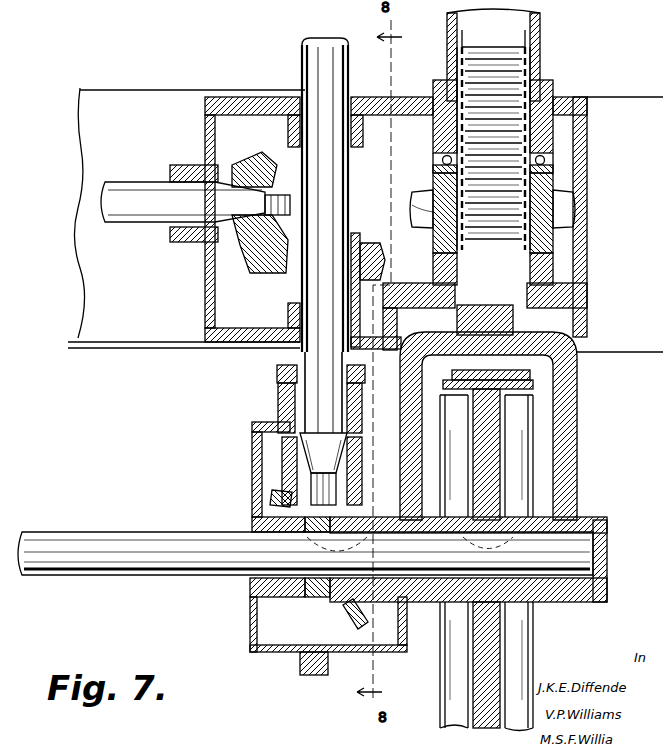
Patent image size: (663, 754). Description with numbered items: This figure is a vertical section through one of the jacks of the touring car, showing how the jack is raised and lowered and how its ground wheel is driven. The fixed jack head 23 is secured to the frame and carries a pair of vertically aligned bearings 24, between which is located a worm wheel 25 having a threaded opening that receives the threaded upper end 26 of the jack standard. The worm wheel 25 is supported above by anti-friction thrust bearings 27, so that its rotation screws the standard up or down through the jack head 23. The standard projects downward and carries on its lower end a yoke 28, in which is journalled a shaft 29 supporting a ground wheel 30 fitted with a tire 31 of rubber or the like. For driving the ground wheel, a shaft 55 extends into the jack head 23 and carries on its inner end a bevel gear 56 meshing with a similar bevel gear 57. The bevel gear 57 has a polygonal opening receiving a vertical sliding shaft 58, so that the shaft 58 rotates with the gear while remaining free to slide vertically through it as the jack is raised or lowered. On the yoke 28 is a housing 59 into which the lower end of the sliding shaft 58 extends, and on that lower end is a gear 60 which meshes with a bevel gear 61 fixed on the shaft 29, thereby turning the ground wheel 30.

The jack head 23 is at (560, 103).
The bearings 24 is at (540, 137).
The worm wheel 25 is at (555, 205).
The threaded upper end 26 is at (548, 181).
The anti-friction thrust bearings 27 is at (548, 162).
The yoke 28 is at (570, 437).
The shaft 29 is at (573, 547).
The ground wheel 30 is at (520, 478).
The tire 31 is at (505, 379).
The shaft 55 is at (130, 188).
The bevel gear 56 is at (258, 160).
The bevel gear 57 is at (272, 272).
The vertical sliding shaft 58 is at (305, 342).
The housing 59 is at (256, 453).
The gear 60 is at (288, 465).
The bevel gear 61 is at (358, 630).